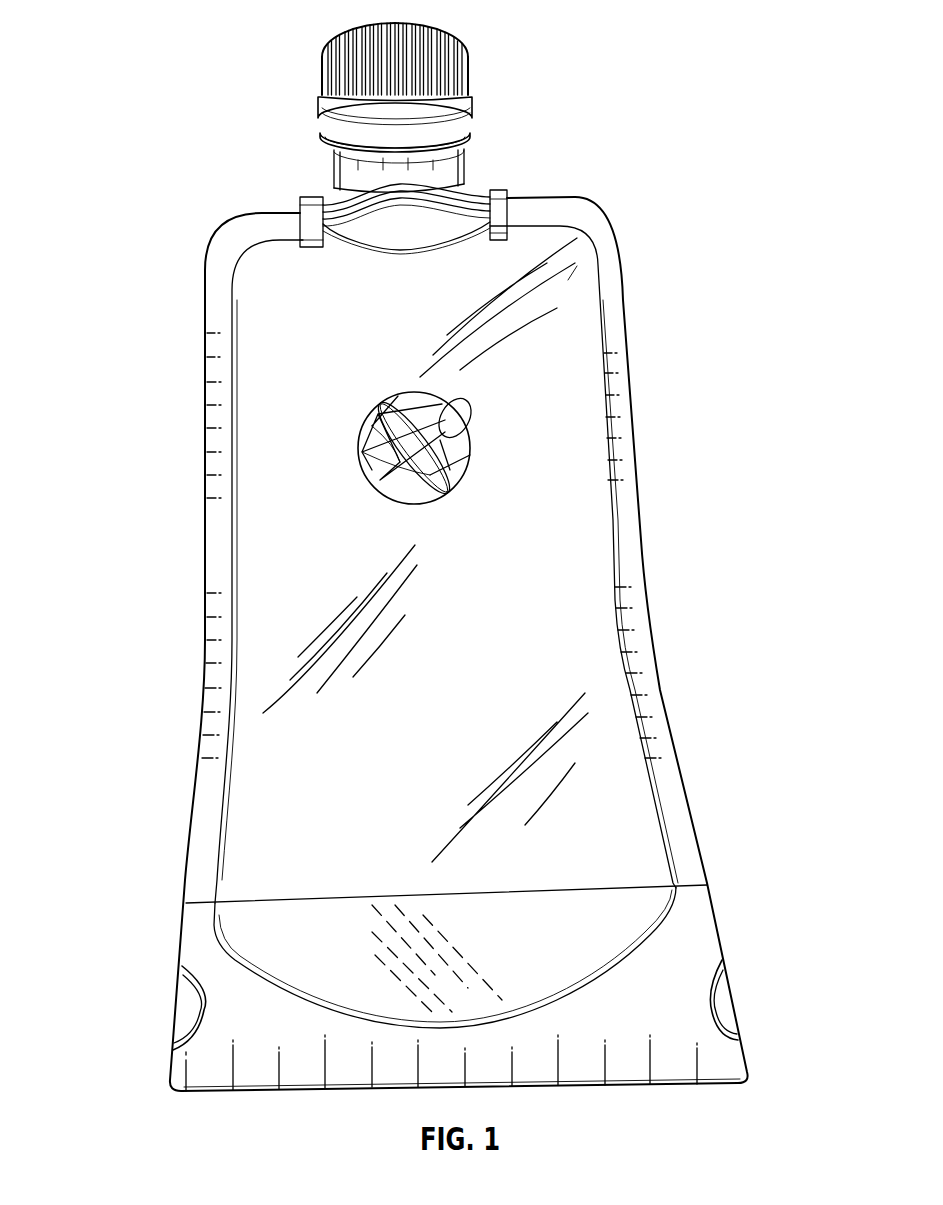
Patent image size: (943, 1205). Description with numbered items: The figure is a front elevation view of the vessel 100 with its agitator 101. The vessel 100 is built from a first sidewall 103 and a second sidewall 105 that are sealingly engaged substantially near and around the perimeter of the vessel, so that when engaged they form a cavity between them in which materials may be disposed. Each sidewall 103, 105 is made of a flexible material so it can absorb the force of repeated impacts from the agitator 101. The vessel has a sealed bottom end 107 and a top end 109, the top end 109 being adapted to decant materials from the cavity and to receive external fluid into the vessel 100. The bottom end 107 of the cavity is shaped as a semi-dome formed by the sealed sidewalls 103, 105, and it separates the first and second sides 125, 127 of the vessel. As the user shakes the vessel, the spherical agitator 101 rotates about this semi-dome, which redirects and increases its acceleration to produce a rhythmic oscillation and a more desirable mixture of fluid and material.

The vessel 100 is at (144, 82).
The agitator 101 is at (383, 400).
The first sidewall 103 is at (577, 266).
The second sidewall 105 is at (653, 292).
The sealed bottom end 107 is at (690, 950).
The top end 109 is at (465, 133).
The first side 125 is at (217, 672).
The second side 127 is at (637, 630).